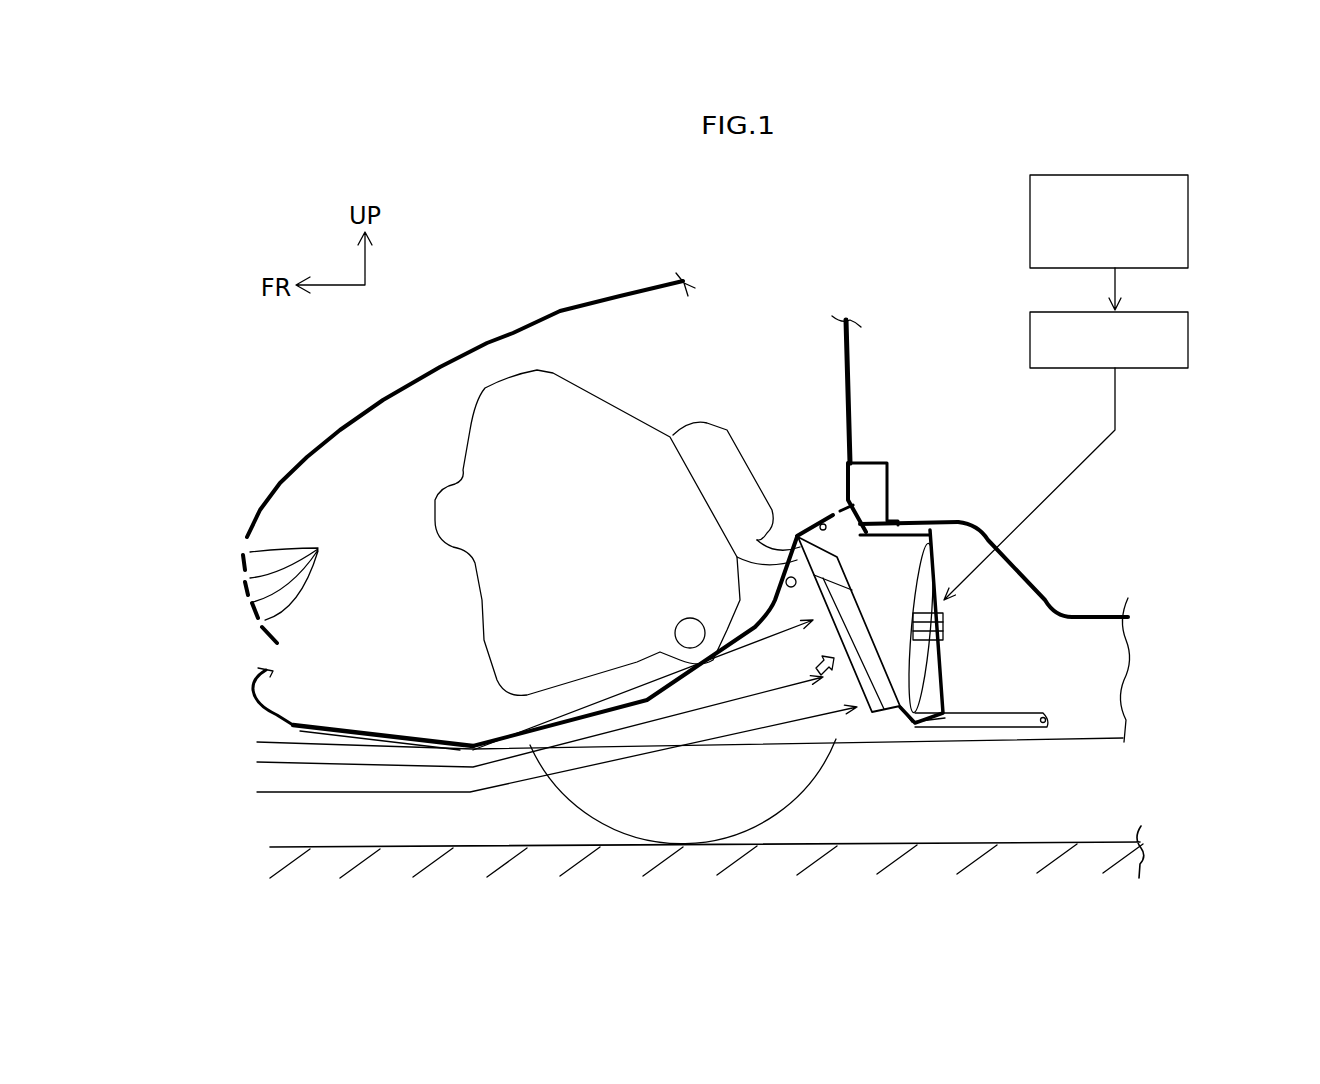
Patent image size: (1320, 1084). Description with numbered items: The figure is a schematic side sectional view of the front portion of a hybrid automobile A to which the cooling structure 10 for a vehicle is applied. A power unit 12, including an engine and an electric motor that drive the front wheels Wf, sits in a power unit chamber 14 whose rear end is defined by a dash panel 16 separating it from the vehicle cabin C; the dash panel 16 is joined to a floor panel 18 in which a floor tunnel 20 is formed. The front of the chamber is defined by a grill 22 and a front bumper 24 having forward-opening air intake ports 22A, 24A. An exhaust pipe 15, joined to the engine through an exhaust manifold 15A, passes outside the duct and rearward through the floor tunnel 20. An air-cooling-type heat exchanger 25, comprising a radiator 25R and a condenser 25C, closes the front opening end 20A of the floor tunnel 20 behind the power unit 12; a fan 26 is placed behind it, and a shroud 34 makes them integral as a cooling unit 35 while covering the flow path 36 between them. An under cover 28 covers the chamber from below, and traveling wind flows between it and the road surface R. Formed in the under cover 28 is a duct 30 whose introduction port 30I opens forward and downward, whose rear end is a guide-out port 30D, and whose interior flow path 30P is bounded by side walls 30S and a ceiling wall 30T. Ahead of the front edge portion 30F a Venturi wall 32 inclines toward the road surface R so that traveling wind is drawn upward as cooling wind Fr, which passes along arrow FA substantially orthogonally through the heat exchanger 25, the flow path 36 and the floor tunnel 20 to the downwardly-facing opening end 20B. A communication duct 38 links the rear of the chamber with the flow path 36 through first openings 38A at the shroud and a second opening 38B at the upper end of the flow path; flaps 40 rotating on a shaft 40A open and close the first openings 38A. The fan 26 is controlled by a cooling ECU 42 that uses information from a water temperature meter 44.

The cooling structure for a vehicle 10 is at (1003, 779).
The power unit 12 is at (638, 405).
The power unit chamber 14 is at (342, 495).
The exhaust pipe 15 is at (752, 555).
The exhaust manifold 15A is at (708, 440).
The dash panel 16 is at (850, 368).
The floor panel 18 is at (1116, 603).
The floor tunnel 20 is at (1033, 580).
The opening end 20A is at (923, 522).
The downwardly-facing opening end 20B is at (1083, 730).
The grill 22 is at (242, 566).
The air intake port 22A is at (313, 574).
The front bumper 24 is at (253, 690).
The air intake port 24A is at (273, 668).
The air-cooling-type heat exchanger 25 is at (950, 800).
The condenser 25C is at (873, 717).
The radiator 25R is at (893, 717).
The fan 26 is at (927, 668).
The under cover 28 is at (374, 723).
The duct 30 is at (714, 622).
The guide-out port 30D is at (767, 583).
The front edge portion 30F is at (473, 745).
The introduction port 30I is at (606, 745).
The flow path 30P is at (815, 715).
The side walls 30S is at (717, 627).
The ceiling wall 30T is at (643, 697).
The Venturi wall 32 is at (395, 740).
The shroud 34 is at (947, 703).
The cooling unit 35 is at (962, 621).
The flow path 36 is at (895, 614).
The communication duct 38 is at (847, 495).
The first openings 38A is at (851, 460).
The second opening 38B is at (868, 535).
The flaps 40 is at (824, 513).
The shaft 40A is at (828, 528).
The cooling ECU 42 is at (1190, 328).
The water temperature meter 44 is at (1190, 247).
The automobile A is at (611, 275).
The vehicle cabin C is at (1194, 431).
The arrow FA is at (814, 656).
The cooling wind Fr is at (468, 755).
The front wheels Wf is at (797, 777).
The road surface R is at (1040, 843).